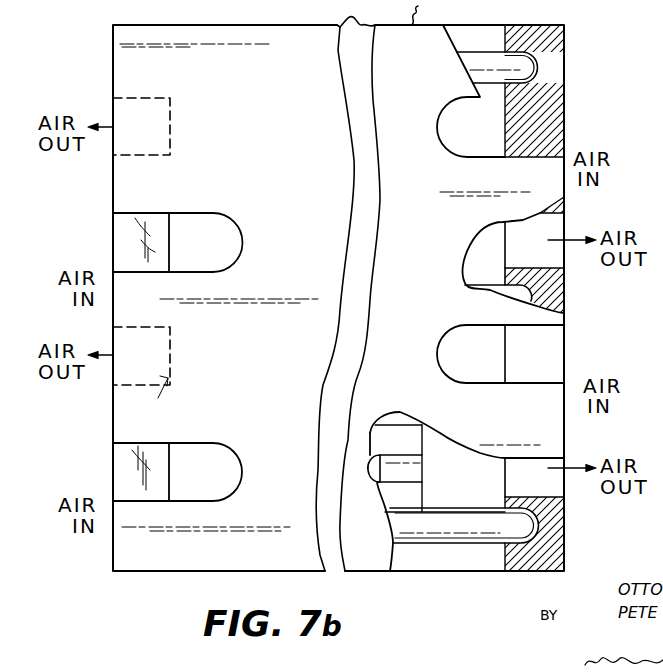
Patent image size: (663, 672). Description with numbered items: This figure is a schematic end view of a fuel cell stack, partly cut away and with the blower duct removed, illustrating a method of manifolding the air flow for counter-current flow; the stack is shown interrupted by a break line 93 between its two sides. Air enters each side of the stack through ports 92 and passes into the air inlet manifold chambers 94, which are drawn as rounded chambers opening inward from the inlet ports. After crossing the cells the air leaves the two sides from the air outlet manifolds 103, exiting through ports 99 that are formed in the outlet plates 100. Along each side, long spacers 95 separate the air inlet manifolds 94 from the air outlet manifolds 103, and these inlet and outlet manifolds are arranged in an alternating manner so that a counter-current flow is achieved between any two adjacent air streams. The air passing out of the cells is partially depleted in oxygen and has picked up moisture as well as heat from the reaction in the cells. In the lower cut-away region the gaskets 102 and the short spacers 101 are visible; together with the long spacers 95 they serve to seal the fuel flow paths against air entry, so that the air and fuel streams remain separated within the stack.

The port 92 is at (132, 250).
The break line 93 is at (348, 285).
The air inlet manifold chamber 94 is at (200, 240).
The long spacer 95 is at (521, 70).
The port 99 is at (573, 281).
The outlet plate 100 is at (565, 25).
The short spacer 101 is at (410, 470).
The gasket 102 is at (372, 477).
The air outlet manifold 103 is at (483, 255).